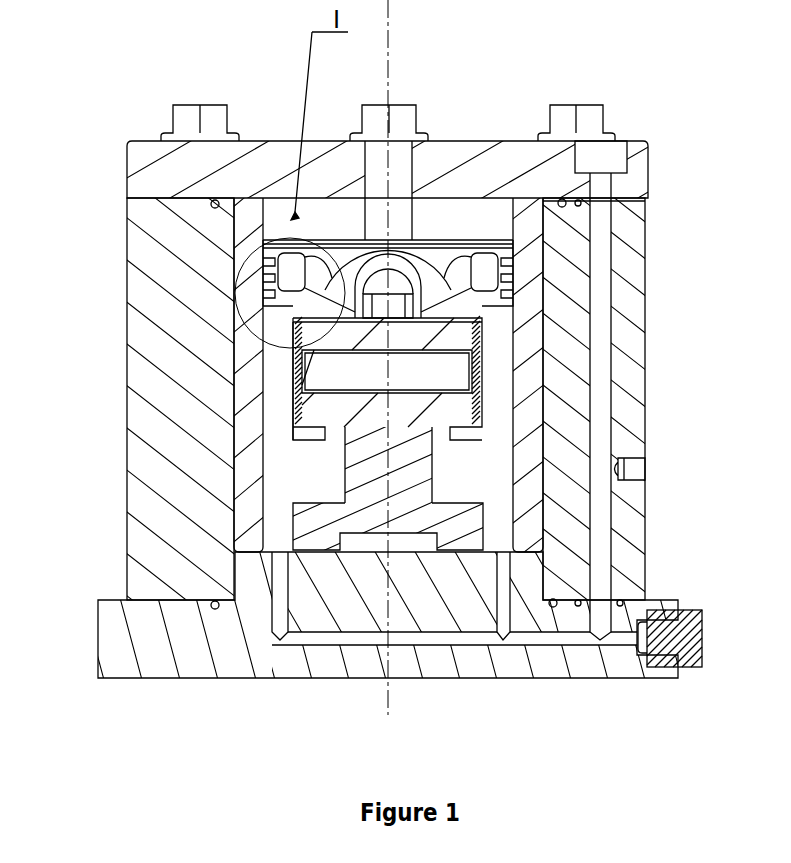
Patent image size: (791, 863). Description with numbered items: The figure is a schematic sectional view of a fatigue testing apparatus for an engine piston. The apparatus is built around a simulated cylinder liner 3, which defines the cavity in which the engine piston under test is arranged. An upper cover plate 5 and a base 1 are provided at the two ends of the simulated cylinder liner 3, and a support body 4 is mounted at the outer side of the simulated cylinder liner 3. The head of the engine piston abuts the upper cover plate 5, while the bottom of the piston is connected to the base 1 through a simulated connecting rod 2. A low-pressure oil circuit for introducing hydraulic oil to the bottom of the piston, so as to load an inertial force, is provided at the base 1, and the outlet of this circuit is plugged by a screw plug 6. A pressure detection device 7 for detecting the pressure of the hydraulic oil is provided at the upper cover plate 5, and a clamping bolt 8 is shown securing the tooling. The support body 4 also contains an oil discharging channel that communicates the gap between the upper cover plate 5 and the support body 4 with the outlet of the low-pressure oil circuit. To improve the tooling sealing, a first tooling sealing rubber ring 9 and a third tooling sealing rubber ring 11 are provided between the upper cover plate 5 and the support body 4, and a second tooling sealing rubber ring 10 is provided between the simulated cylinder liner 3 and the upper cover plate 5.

The base 1 is at (185, 627).
The simulated connecting rod 2 is at (328, 527).
The simulated cylinder liner 3 is at (245, 428).
The support body 4 is at (168, 383).
The upper cover plate 5 is at (185, 171).
The screw plug 6 is at (685, 638).
The pressure detection device 7 is at (617, 144).
The clamping bolt 8 is at (585, 121).
The first tooling sealing rubber ring 9 is at (215, 205).
The second tooling sealing rubber ring 10 is at (266, 222).
The third tooling sealing rubber ring 11 is at (622, 200).